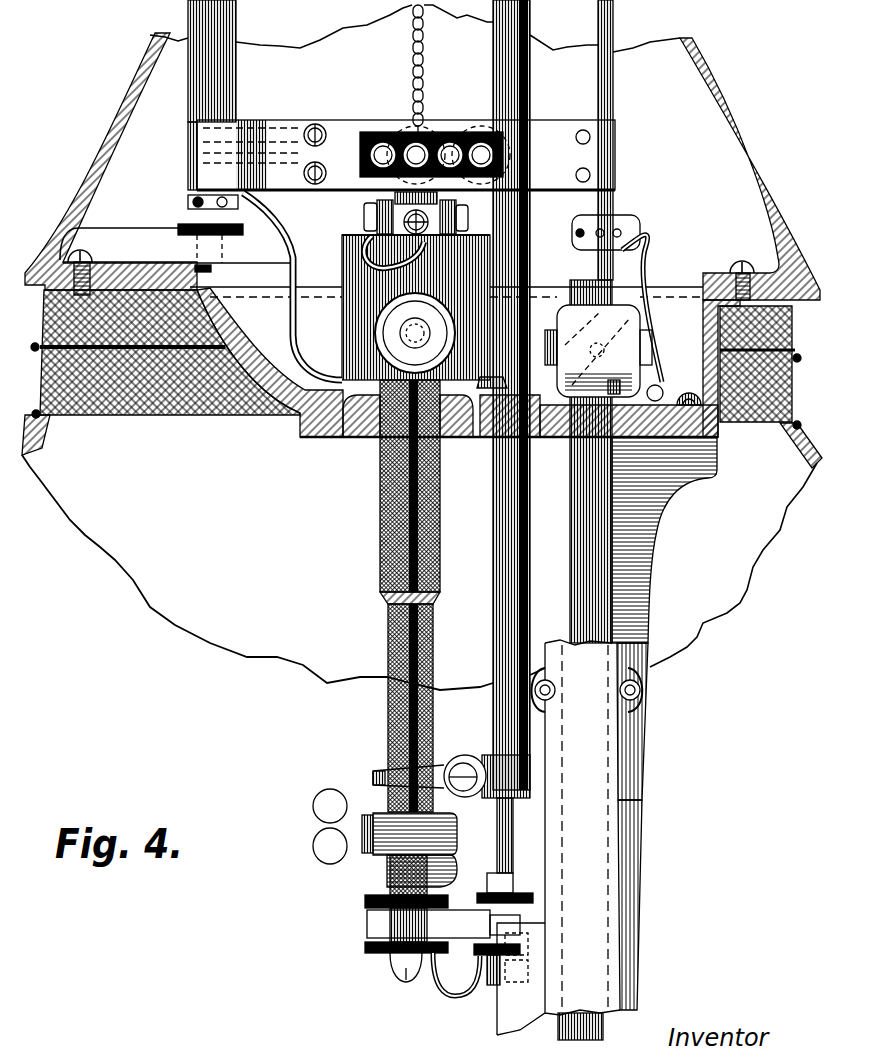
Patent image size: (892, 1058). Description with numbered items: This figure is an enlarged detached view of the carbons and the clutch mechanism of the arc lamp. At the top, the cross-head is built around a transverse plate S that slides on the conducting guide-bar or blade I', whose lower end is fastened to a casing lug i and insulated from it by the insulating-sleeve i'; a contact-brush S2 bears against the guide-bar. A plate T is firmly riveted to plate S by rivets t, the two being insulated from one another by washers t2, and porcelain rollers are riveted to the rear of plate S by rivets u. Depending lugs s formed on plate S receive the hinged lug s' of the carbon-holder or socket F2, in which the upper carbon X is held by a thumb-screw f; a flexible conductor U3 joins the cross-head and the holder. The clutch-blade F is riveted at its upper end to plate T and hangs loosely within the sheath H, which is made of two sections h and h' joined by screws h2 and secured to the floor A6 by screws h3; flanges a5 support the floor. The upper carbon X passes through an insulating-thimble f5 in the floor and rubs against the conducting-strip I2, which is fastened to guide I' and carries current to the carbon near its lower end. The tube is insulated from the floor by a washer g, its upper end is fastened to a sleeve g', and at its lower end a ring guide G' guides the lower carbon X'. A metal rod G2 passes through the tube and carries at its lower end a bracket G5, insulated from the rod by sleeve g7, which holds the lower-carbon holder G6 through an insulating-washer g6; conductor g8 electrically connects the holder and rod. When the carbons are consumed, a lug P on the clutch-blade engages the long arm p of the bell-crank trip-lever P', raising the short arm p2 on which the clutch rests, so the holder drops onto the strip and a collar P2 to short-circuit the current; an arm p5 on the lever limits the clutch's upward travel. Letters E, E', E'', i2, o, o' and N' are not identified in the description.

The conducting guide-bar or blade I' is at (202, 95).
The transverse plate or bar S is at (264, 122).
The contact-brush S2 is at (311, 137).
The washers t2 is at (382, 130).
The dial box E' is at (435, 139).
The upright rod E is at (591, 140).
The plate T is at (406, 155).
The depending lugs s is at (409, 213).
The lug s' is at (412, 220).
The block or socket (carbon-holder) F2 is at (476, 233).
The flexible conductor U3 is at (345, 256).
The sheet-metal conducting-strip I2 is at (292, 286).
The lug or flange i is at (119, 236).
The clamp bar i2 is at (180, 223).
The insulating-sleeve i' is at (223, 253).
The inwardly-projecting flanges a5 is at (118, 266).
The clutch-blade F is at (613, 214).
The lug P is at (618, 227).
The long arm p is at (641, 247).
The arm p5 is at (580, 285).
The lug or collar P2 is at (531, 374).
The bracket E'' is at (598, 351).
The bell-crank lever (trip-lever) P' is at (654, 308).
The short arm p2 is at (618, 375).
The screws h3 is at (690, 397).
The block o is at (162, 352).
The block pin o' is at (36, 411).
The bottom section or floor A6 is at (338, 430).
The insulating-thimble f5 is at (362, 442).
The insulating washer or sleeve g is at (506, 429).
The upper carbon X is at (397, 486).
The forked or ring guide G' is at (451, 399).
The thumb-screw f is at (415, 333).
The stand N' is at (283, 572).
The sheath section h is at (643, 706).
The screws h2 is at (595, 687).
The sheath section h' is at (643, 892).
The sheath H is at (558, 837).
The lower carbon X' is at (399, 743).
The lower-carbon holder G6 is at (385, 839).
The insulating-washer g6 is at (366, 903).
The bracket G5 is at (470, 921).
The insulating-sleeve g7 is at (492, 898).
The sleeve g' is at (488, 964).
The conductor g8 is at (477, 997).
The metal rod G2 is at (514, 852).
The rivets u is at (418, 155).
The rivets t is at (448, 155).